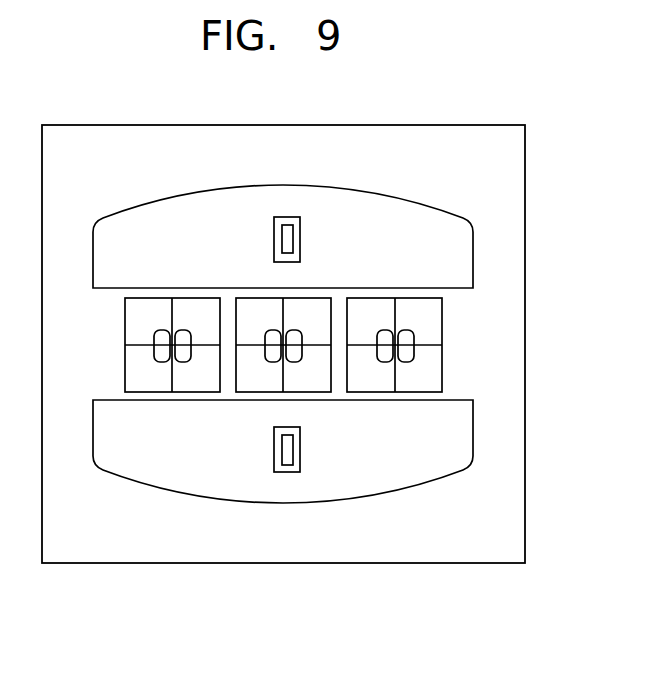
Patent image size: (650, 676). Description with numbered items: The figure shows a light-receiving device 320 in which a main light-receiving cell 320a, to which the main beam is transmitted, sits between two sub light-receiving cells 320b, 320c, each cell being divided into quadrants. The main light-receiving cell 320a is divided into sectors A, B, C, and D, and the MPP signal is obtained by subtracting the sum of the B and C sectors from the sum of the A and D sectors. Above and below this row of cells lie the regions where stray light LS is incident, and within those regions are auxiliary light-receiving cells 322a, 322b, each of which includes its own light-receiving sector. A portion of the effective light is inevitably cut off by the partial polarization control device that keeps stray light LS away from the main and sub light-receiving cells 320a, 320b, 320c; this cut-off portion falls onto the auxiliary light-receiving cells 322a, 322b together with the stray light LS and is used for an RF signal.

The light-receiving device 320 is at (520, 346).
The stray light LS is at (467, 258).
The main light-receiving cell 320a is at (258, 392).
The sub light-receiving cell 320b is at (157, 392).
The sub light-receiving cell 320c is at (375, 392).
The auxiliary light-receiving cell 322a is at (300, 238).
The auxiliary light-receiving cell 322b is at (300, 450).